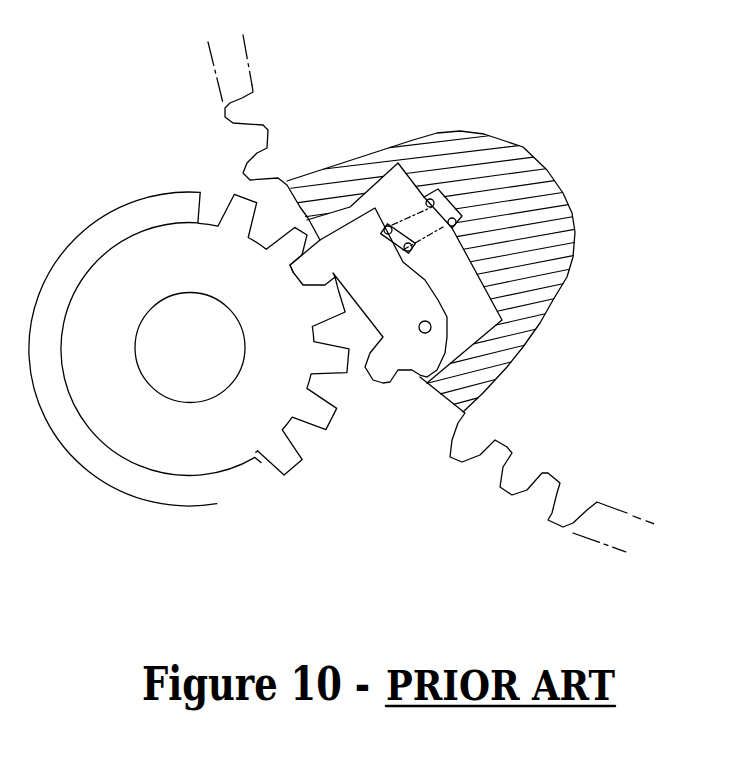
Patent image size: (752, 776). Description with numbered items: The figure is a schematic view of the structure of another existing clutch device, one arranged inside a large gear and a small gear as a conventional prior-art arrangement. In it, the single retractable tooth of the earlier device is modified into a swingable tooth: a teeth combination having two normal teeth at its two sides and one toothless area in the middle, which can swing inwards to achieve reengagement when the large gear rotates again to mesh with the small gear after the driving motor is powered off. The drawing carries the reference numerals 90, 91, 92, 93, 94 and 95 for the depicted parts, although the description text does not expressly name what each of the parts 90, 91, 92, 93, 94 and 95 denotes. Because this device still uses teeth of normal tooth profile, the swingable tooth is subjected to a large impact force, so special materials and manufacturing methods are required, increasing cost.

The rack 90 is at (548, 520).
The pawl block 91 is at (336, 202).
The housing 92 is at (387, 293).
The pin 93 is at (420, 333).
The spring 94 is at (407, 207).
The gear with guard 95 is at (217, 504).